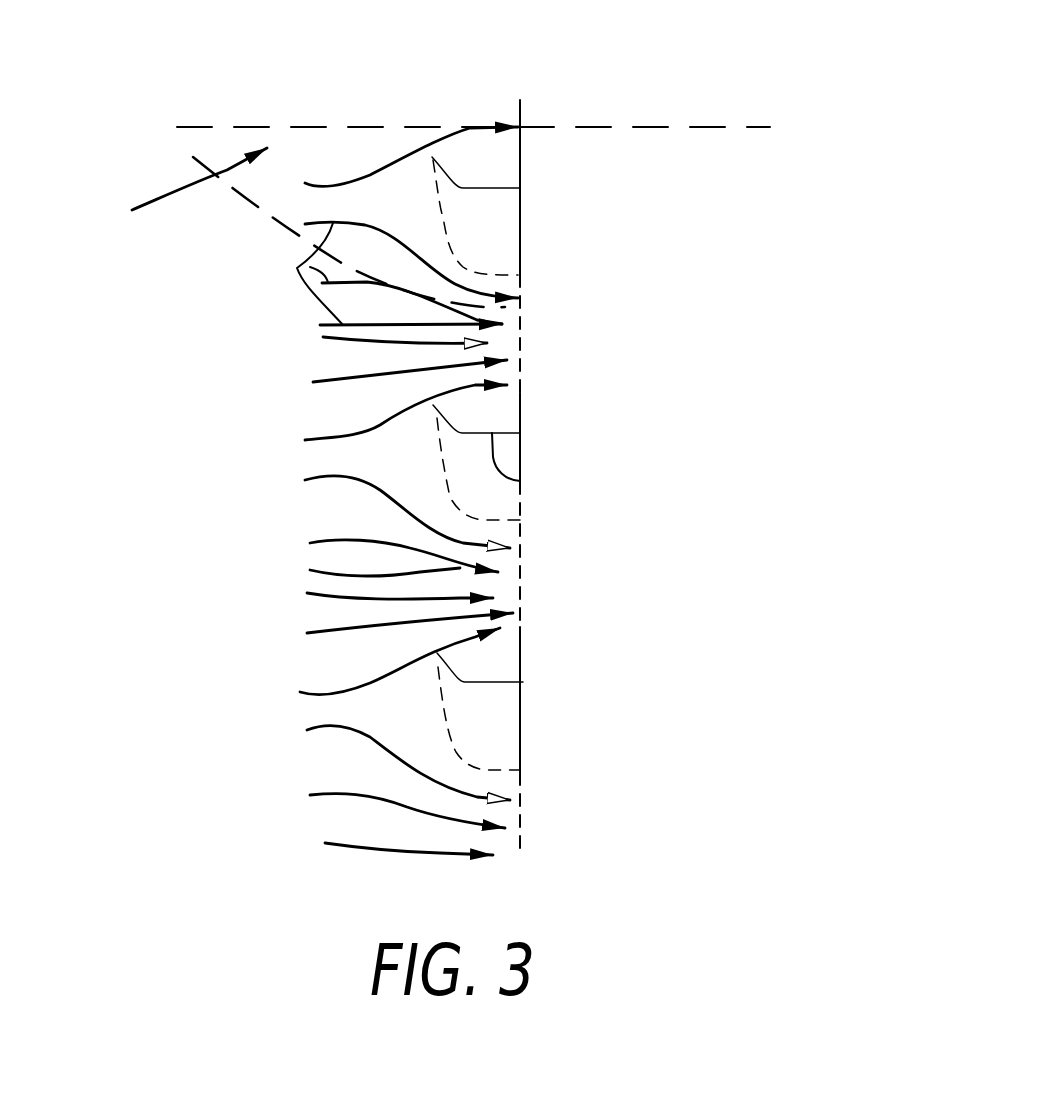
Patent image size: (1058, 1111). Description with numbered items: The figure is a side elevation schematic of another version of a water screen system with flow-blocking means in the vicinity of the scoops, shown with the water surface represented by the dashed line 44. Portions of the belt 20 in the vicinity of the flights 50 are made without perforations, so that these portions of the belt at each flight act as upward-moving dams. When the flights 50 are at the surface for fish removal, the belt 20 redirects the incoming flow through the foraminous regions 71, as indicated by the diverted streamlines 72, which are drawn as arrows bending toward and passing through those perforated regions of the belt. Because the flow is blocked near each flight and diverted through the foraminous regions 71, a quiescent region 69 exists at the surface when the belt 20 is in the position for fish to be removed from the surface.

The belt 20 is at (523, 397).
The surface reference line 44 is at (587, 125).
The flights 50 is at (523, 480).
The quiescent region 69 is at (287, 227).
The foraminous regions 71 is at (528, 327).
The diverted streamlines 72 is at (297, 268).